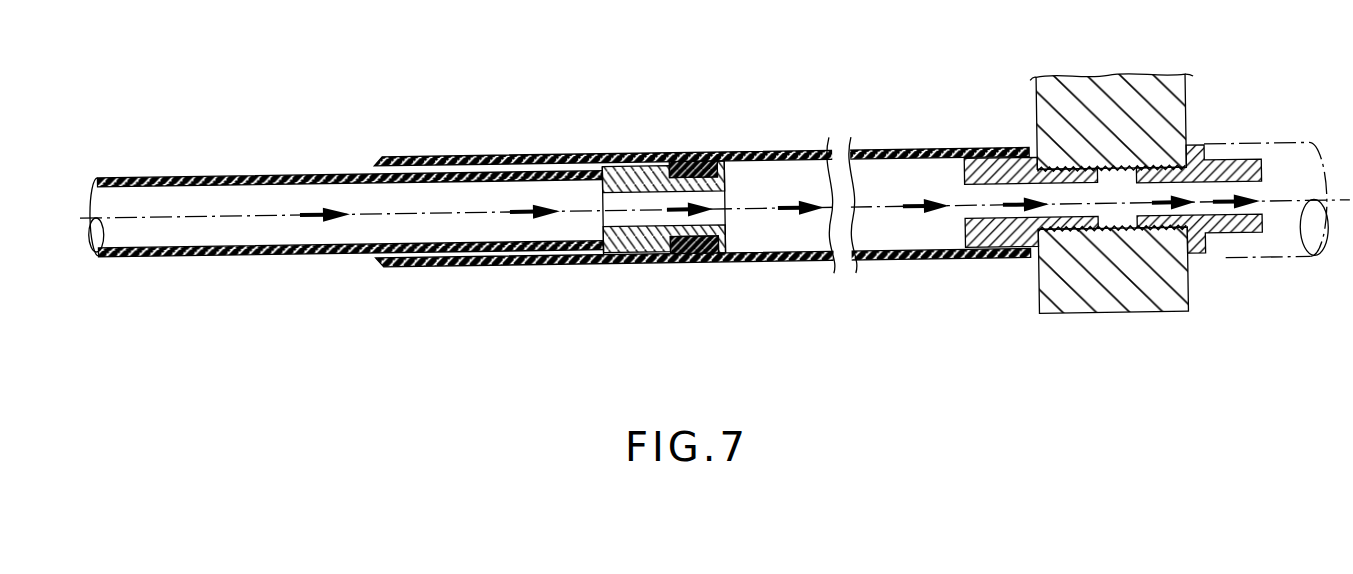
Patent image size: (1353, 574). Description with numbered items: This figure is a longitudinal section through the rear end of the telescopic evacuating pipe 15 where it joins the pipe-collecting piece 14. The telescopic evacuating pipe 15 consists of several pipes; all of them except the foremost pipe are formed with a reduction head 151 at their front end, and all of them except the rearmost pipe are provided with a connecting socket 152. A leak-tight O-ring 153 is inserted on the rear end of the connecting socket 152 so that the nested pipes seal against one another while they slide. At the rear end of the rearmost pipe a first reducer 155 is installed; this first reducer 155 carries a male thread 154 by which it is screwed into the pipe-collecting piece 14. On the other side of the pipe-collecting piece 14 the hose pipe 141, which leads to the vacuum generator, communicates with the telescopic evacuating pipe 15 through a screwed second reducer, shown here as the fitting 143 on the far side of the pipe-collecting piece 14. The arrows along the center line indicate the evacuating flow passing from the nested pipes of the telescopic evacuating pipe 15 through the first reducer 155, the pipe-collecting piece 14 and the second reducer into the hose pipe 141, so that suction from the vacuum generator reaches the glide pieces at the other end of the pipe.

The pipe-collecting piece 14 is at (1115, 112).
The telescopic evacuating pipe 15 is at (643, 142).
The hosepipe 141 is at (1280, 163).
The outlet fitting 143 is at (1225, 227).
The reduction head 151 is at (374, 168).
The connecting socket 152 is at (658, 238).
The leak-tight O-ring 153 is at (693, 250).
The male thread 154 is at (1097, 227).
The first reducer 155 is at (990, 232).